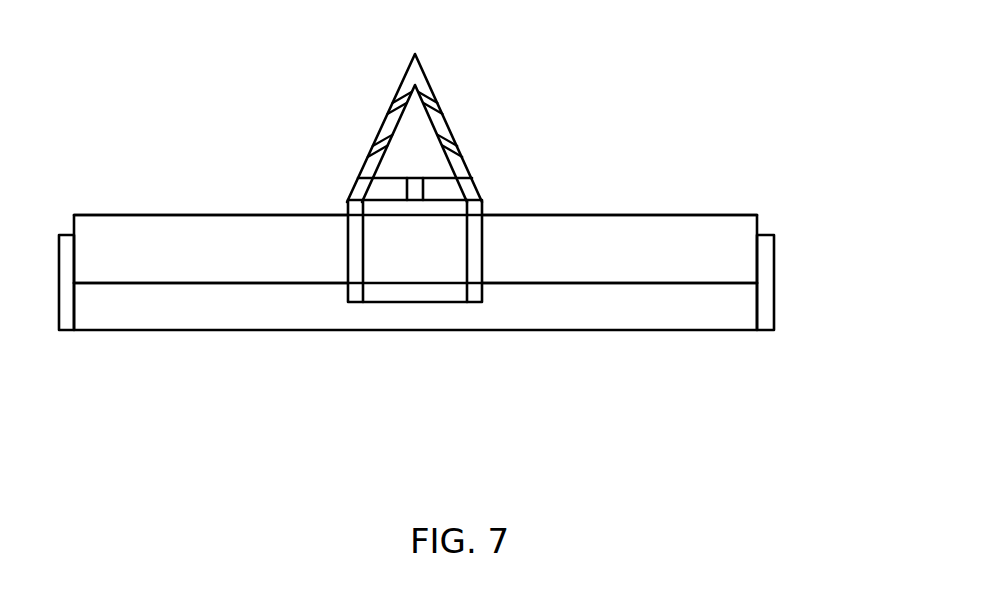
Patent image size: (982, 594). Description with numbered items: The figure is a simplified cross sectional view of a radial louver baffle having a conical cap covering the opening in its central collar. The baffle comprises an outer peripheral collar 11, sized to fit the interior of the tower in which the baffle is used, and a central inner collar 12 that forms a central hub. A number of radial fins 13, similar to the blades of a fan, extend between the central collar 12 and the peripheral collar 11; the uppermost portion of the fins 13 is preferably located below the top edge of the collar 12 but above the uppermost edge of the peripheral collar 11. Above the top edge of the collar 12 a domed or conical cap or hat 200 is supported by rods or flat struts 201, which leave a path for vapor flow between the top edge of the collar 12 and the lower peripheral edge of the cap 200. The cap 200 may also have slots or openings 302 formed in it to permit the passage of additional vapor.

The peripheral collar 11 is at (775, 282).
The radial fins 13 is at (693, 220).
The central inner collar 12 is at (473, 230).
The conical cap 200 is at (427, 80).
The slots or openings 302 is at (395, 97).
The rods or flat struts 201 is at (357, 190).